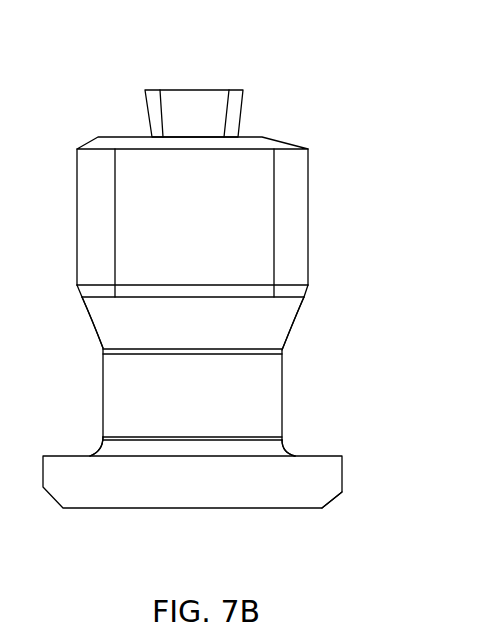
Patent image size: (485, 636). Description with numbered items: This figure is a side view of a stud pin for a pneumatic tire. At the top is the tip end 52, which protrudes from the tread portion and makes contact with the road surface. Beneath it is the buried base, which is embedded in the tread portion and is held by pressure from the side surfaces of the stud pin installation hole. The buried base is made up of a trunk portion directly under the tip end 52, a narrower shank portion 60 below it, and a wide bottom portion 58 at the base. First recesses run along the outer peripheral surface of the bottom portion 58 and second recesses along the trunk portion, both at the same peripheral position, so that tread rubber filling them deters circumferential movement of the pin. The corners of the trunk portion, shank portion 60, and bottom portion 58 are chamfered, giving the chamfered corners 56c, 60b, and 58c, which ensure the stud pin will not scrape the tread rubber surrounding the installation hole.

The tip end 52 is at (195, 108).
The chamfered corner of trunk portion 56c is at (289, 143).
The bottom portion 58 is at (202, 487).
The chamfered corner of bottom portion 58c is at (332, 502).
The shank portion 60 is at (272, 388).
The chamfered corner of shank portion 60b is at (272, 325).